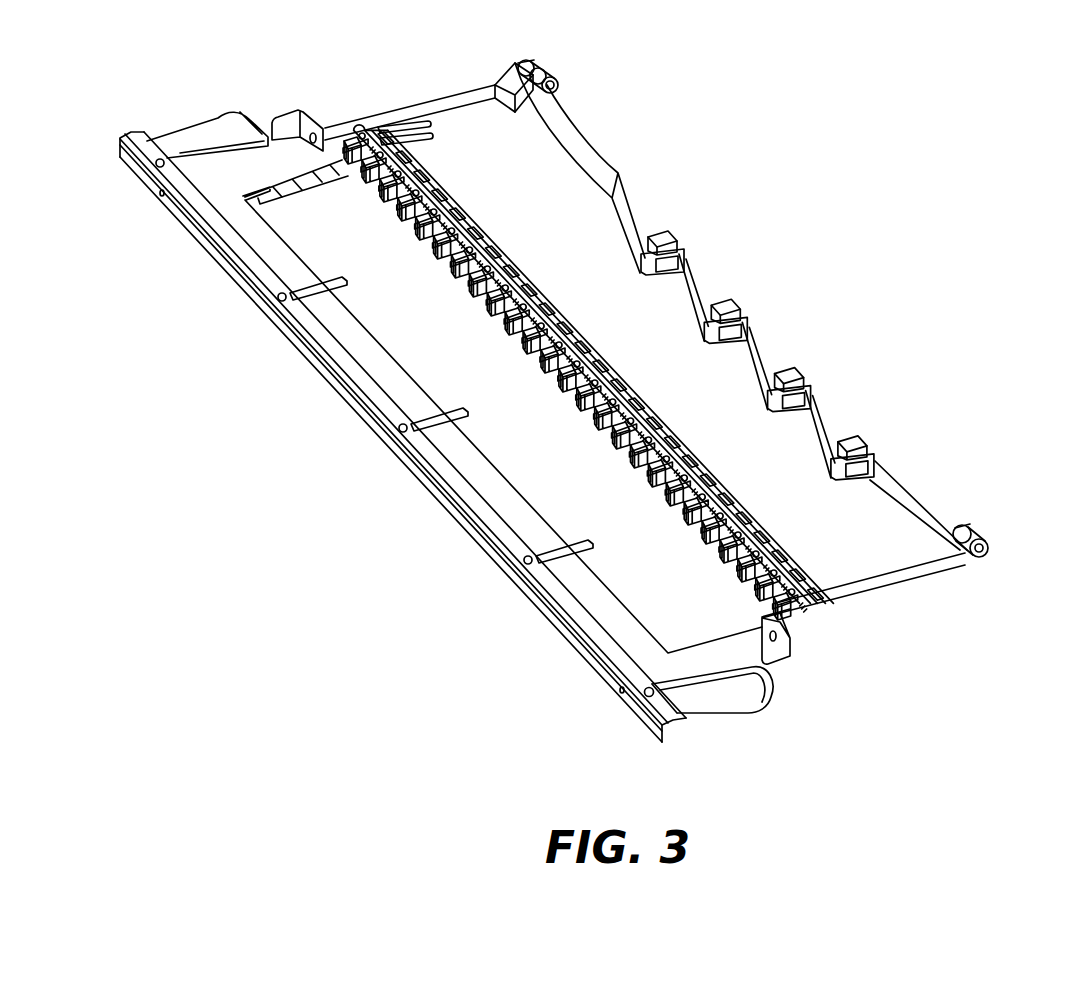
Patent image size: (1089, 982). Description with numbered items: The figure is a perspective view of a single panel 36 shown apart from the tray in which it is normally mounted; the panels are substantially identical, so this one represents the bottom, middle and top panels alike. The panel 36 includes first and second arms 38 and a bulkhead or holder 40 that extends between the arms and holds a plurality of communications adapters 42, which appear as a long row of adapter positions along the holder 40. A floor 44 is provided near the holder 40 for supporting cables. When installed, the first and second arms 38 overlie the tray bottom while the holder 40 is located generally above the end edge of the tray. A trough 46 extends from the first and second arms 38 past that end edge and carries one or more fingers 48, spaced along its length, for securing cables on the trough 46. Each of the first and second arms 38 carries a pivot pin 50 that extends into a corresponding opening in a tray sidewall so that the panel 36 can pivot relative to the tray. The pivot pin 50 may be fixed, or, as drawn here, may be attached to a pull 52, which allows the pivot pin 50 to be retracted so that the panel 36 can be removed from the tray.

The panel 36 is at (818, 691).
The first and second arms 38 is at (413, 100).
The bulkhead or holder 40 is at (800, 580).
The communications adapters 42 is at (670, 525).
The floor 44 is at (553, 157).
The trough 46 is at (597, 602).
The fingers 48 is at (433, 424).
The pivot pin 50 is at (527, 58).
The pull 52 is at (556, 86).